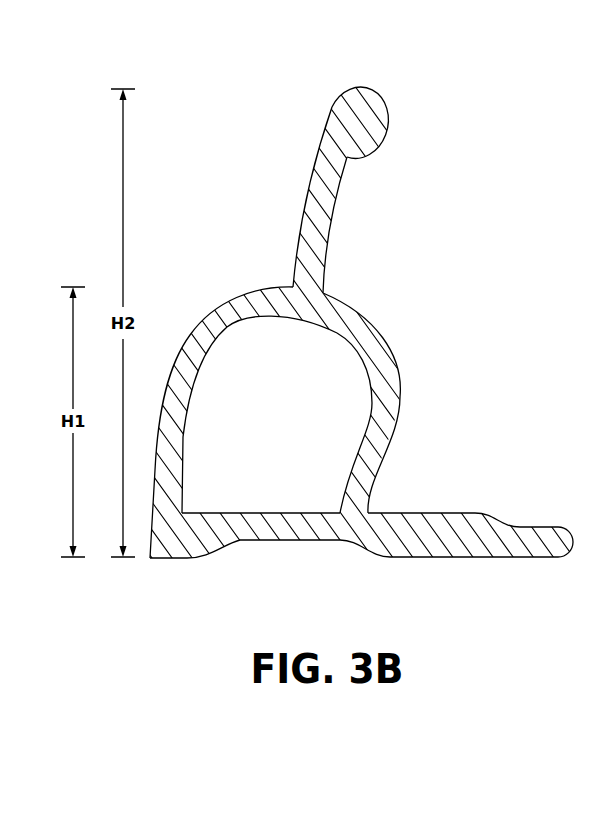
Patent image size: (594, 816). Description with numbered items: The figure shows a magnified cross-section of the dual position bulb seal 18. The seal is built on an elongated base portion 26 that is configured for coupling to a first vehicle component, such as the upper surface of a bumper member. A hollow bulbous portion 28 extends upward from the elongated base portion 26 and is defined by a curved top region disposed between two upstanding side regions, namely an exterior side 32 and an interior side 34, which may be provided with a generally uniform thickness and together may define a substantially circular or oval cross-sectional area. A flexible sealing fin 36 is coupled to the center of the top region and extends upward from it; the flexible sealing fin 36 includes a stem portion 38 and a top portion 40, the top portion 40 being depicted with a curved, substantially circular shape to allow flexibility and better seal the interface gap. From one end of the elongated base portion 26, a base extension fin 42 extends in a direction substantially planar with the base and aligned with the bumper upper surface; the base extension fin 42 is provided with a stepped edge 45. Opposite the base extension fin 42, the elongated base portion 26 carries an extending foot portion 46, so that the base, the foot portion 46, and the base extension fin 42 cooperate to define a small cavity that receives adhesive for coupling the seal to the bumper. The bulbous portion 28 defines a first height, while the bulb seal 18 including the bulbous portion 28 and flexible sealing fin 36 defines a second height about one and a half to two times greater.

The dual position bulb seal 18 is at (416, 112).
The elongated base portion 26 is at (283, 530).
The bulbous portion 28 is at (305, 308).
The exterior side 32 is at (185, 367).
The interior side 34 is at (383, 383).
The flexible sealing fin 36 is at (335, 163).
The stem portion 38 is at (317, 185).
The top portion 40 is at (368, 102).
The base extension fin 42 is at (457, 540).
The stepped edge 45 is at (512, 518).
The foot portion 46 is at (163, 558).